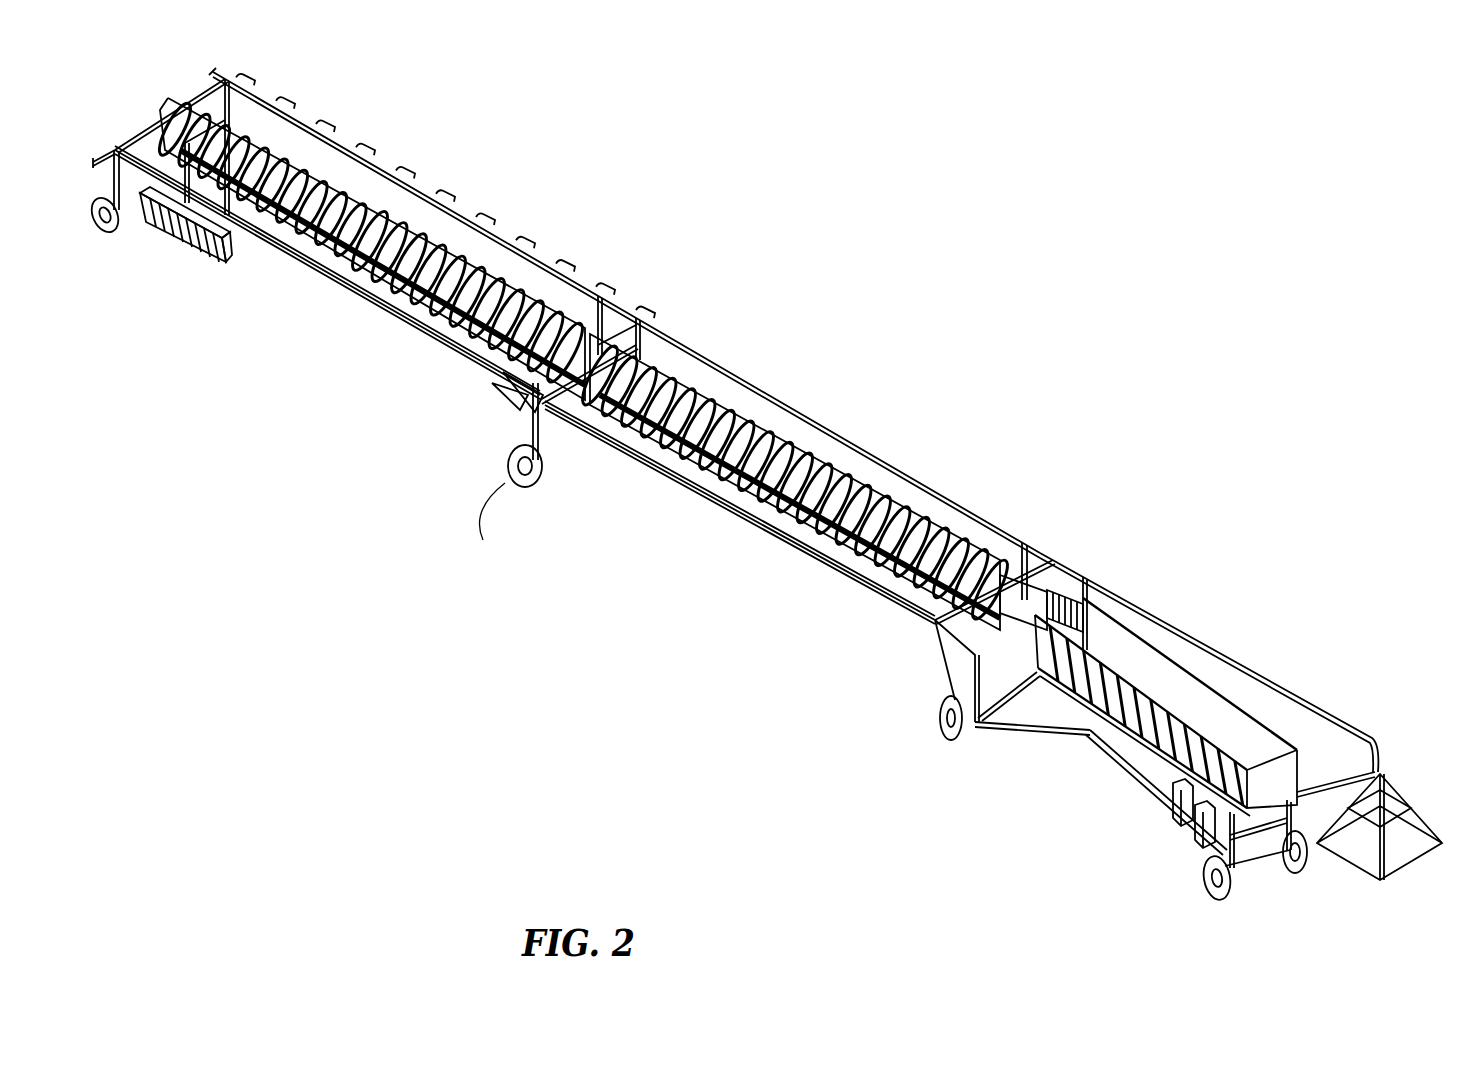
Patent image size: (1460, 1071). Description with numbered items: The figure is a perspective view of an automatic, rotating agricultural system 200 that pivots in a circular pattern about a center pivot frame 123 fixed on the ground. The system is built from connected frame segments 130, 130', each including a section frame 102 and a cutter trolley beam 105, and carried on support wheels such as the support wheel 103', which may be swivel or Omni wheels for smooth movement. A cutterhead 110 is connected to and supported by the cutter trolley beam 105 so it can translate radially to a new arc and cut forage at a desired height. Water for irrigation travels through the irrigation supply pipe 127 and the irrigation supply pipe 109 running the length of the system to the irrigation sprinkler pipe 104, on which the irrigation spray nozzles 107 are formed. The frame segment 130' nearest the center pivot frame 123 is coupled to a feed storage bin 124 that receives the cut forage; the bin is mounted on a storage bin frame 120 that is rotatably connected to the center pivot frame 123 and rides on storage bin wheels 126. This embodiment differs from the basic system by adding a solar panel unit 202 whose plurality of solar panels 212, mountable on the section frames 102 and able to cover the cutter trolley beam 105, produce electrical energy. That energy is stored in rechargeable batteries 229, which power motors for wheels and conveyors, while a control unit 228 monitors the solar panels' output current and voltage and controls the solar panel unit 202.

The automatic, rotating agricultural system 200 is at (1287, 158).
The solar panel unit 202 is at (804, 318).
The irrigation sprinkler pipe 104 is at (370, 157).
The irrigation supply pipe 109 is at (856, 443).
The irrigation spray nozzles 107 is at (470, 195).
The section frame 102 is at (413, 320).
The frame segment 130 is at (329, 321).
The frame segment 130' is at (797, 541).
The support wheel 103' is at (105, 248).
The cutterhead 110 is at (185, 228).
The cutter trolley beam 105 is at (353, 255).
The solar panels 212 is at (262, 152).
The storage bin frame 120 is at (1050, 740).
The irrigation supply pipe 127 is at (1135, 603).
The feed storage bin 124 is at (1180, 703).
The control unit 228 is at (1173, 807).
The rechargeable batteries 229 is at (1187, 837).
The storage bin wheels 126 is at (1207, 883).
The center pivot frame 123 is at (1397, 773).